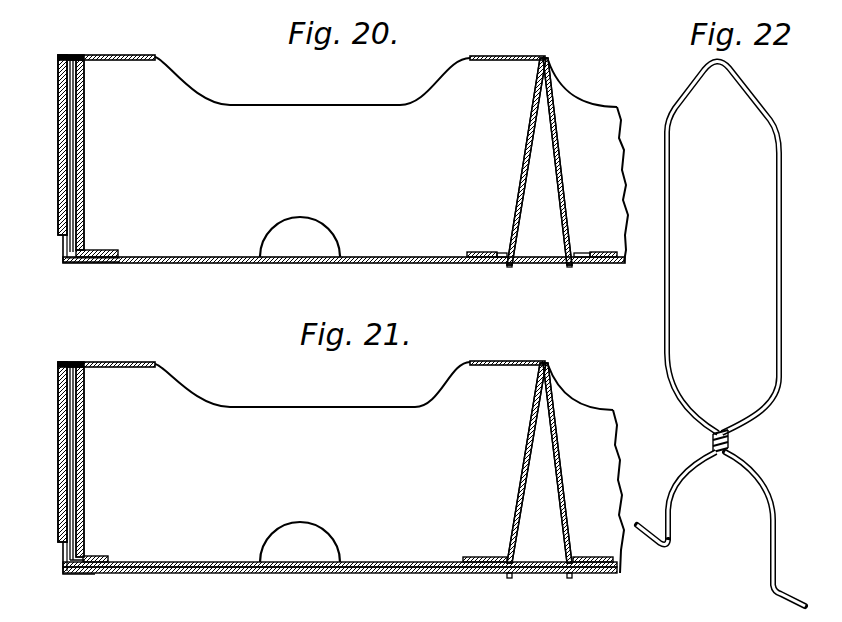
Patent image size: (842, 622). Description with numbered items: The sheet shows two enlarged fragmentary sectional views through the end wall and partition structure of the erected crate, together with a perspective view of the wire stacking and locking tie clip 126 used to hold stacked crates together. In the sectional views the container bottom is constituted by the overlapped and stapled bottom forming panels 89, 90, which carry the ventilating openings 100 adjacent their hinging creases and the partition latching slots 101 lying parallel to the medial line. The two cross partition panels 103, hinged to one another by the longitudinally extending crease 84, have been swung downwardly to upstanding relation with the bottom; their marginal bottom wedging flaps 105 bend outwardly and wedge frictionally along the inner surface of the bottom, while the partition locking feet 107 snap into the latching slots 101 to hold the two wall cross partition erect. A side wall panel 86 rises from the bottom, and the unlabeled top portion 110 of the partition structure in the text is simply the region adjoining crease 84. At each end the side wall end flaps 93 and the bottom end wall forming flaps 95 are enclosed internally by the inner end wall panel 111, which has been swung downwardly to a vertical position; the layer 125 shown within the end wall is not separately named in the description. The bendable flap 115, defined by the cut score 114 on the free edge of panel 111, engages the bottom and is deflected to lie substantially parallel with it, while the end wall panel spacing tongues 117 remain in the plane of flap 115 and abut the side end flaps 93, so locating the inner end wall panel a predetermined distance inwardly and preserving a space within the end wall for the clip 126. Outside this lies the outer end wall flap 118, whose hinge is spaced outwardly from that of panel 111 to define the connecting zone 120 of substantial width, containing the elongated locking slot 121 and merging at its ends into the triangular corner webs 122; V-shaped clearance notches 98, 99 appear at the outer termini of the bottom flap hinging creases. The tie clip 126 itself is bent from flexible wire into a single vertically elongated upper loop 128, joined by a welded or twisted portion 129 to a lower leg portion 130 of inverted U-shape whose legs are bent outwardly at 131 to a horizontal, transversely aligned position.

In FIG. 20, the longitudinally extending crease 84 is at (548, 57).
In FIG. 21, the longitudinally extending crease 84 is at (543, 362).
In FIG. 20, the side wall panel 86 is at (361, 97).
In FIG. 21, the side wall panel 86 is at (334, 414).
In FIG. 21, the bottom forming panel 89 is at (200, 561).
In FIG. 20, the bottom forming panel 90 is at (188, 263).
In FIG. 21, the bottom forming panel 90 is at (252, 575).
In FIG. 20, the end flap 93 is at (75, 187).
In FIG. 21, the end flap 93 is at (73, 405).
In FIG. 20, the end wall forming flap 95 is at (60, 86).
In FIG. 21, the end wall forming flap 95 is at (60, 420).
In FIG. 21, the V-shaped clearance notch 98 is at (88, 574).
In FIG. 21, the V-shaped clearance notch 99 is at (71, 575).
In FIG. 20, the ventilating opening 100 is at (303, 222).
In FIG. 21, the ventilating opening 100 is at (303, 526).
In FIG. 20, the partition latching slot 101 is at (503, 266).
In FIG. 20, the cross partition panel 103 is at (563, 205).
In FIG. 21, the cross partition panel 103 is at (527, 466).
In FIG. 20, the bottom wedging flap 105 is at (478, 251).
In FIG. 21, the bottom wedging flap 105 is at (478, 556).
In FIG. 20, the partition locking foot 107 is at (510, 268).
In FIG. 21, the partition locking foot 107 is at (566, 580).
In FIG. 20, the top flat wall 110 is at (500, 57).
In FIG. 21, the top flat wall 110 is at (494, 367).
In FIG. 20, the inner end wall panel 111 is at (83, 143).
In FIG. 21, the inner end wall panel 111 is at (83, 474).
In FIG. 20, the cut score 114 is at (115, 211).
In FIG. 20, the bendable flap 115 is at (115, 250).
In FIG. 21, the bendable flap 115 is at (109, 557).
In FIG. 20, the end wall panel spacing tongue 117 is at (70, 264).
In FIG. 20, the outer end wall flap 118 is at (58, 127).
In FIG. 21, the outer end wall flap 118 is at (58, 487).
In FIG. 20, the connecting zone 120 is at (72, 54).
In FIG. 21, the locking slot 121 is at (70, 360).
In FIG. 20, the triangular corner web 122 is at (122, 57).
In FIG. 21, the triangular corner web 122 is at (113, 361).
In FIG. 20, the insulating panel 125 is at (77, 125).
In FIG. 21, the insulating panel 125 is at (78, 446).
In FIG. 22, the tie clip 126 is at (758, 84).
In FIG. 22, the upper loop 128 is at (674, 277).
In FIG. 22, the twisted portion 129 is at (735, 443).
In FIG. 22, the lower leg portion 130 is at (768, 513).
In FIG. 22, the outwardly bent leg end 131 is at (645, 537).